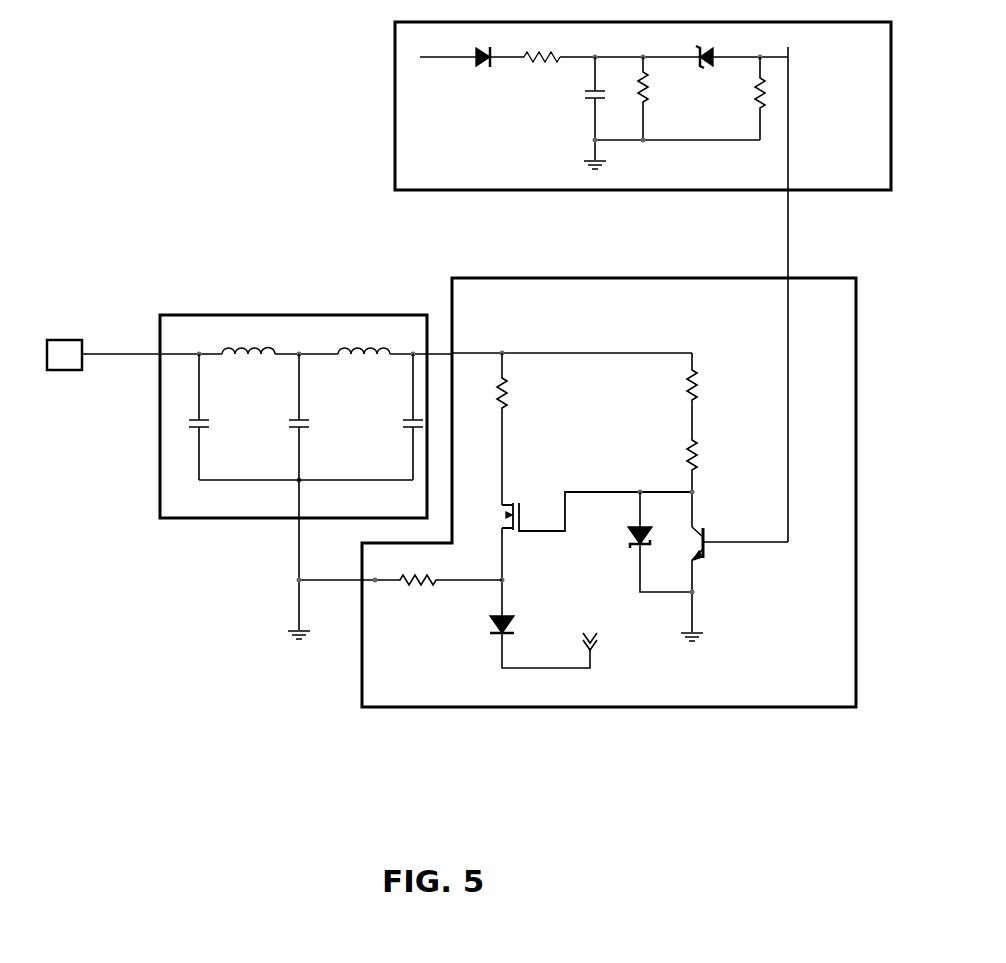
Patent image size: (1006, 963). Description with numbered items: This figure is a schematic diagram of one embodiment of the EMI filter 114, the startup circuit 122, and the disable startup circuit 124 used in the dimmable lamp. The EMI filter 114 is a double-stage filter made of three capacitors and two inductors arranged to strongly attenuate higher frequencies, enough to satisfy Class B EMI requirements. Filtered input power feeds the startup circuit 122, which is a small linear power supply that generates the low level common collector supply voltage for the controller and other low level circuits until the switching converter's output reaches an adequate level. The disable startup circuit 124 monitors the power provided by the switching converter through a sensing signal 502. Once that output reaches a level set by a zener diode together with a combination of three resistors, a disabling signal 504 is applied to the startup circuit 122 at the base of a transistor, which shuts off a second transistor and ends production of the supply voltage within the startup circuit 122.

The EMI filter 114 is at (172, 315).
The startup circuit 122 is at (645, 272).
The disable startup circuit 124 is at (891, 80).
The sensing signal 502 is at (420, 57).
The disabling signal 504 is at (788, 250).